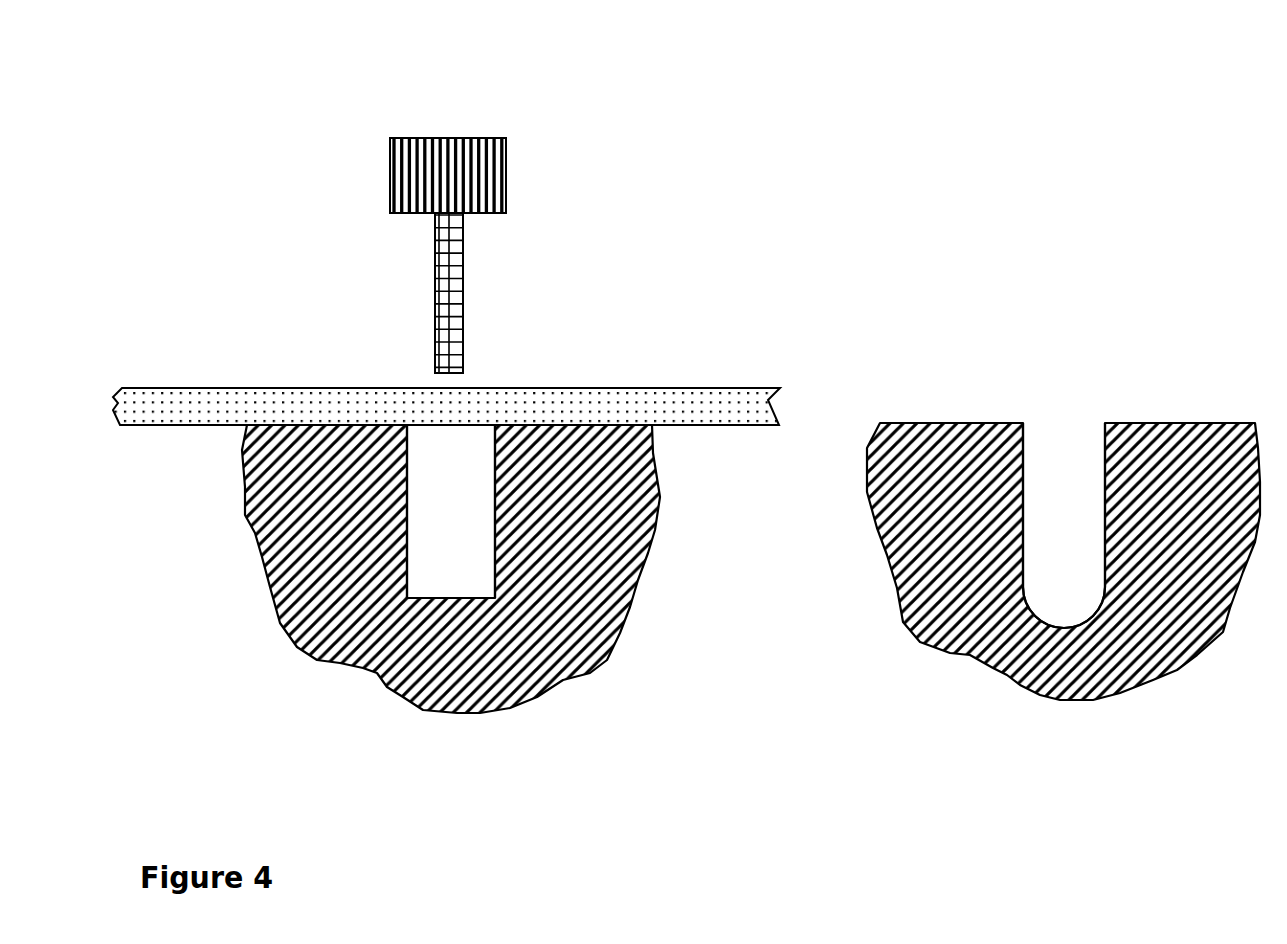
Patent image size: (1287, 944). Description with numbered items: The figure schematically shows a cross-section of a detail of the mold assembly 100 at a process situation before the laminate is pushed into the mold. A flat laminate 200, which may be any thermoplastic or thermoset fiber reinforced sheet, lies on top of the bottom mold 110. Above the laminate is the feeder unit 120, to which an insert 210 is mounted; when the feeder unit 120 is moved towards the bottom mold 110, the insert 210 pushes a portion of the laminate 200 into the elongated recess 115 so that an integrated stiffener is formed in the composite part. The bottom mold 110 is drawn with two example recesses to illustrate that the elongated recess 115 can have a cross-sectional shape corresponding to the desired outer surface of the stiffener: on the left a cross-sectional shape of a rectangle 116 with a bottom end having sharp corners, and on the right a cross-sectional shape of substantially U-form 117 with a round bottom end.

The mold assembly 100 is at (601, 140).
The feeder unit 120 is at (403, 160).
The insert 210 is at (443, 319).
The flat laminate 200 is at (750, 404).
The bottom mold 110 is at (1020, 663).
The elongated recess 115 is at (1052, 490).
The rectangle cross-sectional shape 116 is at (478, 592).
The U-form cross-sectional shape 117 is at (1055, 612).